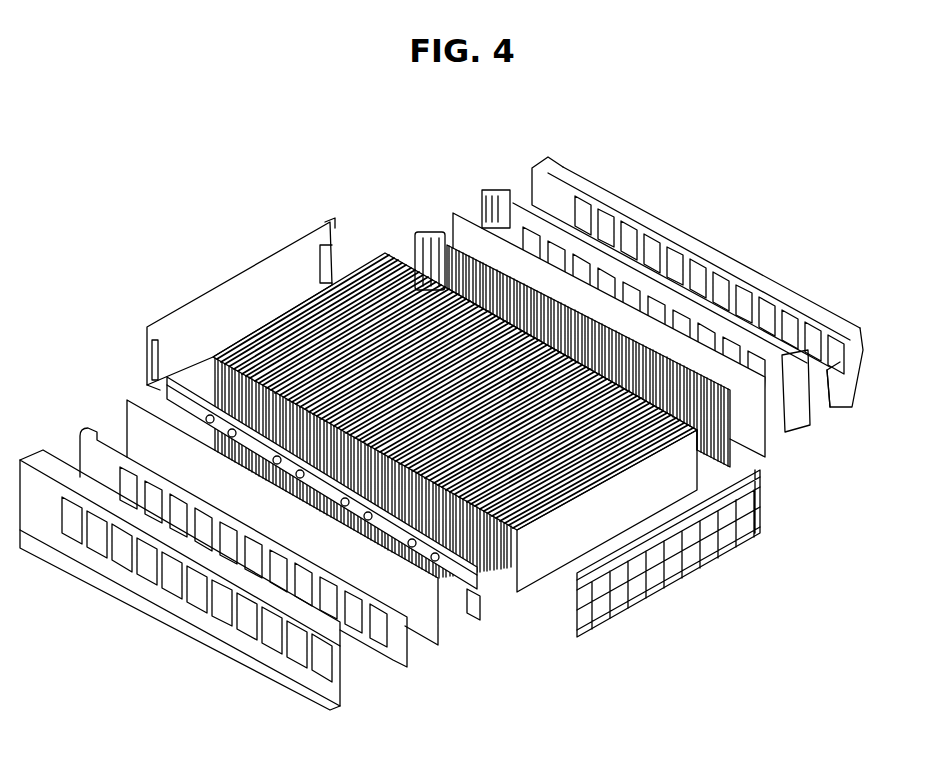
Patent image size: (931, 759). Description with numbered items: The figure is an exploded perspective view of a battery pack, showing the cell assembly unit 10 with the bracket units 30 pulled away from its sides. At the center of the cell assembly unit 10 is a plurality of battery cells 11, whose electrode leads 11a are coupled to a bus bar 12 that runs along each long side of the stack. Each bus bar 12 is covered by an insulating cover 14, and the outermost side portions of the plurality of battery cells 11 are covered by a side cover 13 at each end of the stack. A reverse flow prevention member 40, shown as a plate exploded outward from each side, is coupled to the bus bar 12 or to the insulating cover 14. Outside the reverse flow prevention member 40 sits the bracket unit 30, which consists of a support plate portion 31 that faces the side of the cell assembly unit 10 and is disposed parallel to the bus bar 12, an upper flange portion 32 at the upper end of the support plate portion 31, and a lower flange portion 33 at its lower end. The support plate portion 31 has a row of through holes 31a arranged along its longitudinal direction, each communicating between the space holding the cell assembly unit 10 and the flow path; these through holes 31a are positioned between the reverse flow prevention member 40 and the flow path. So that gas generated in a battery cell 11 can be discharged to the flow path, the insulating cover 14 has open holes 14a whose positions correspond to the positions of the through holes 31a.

The cell assembly unit 10 is at (62, 236).
The battery cell 11 is at (292, 306).
The electrode lead 11a is at (192, 390).
The bus bar 12 is at (174, 378).
The side cover 13 is at (197, 297).
The insulating cover 14 is at (100, 438).
The open hole 14a is at (128, 483).
The bracket unit 30 is at (465, 448).
The support plate portion 31 is at (465, 431).
The through hole 31a is at (190, 593).
The upper flange portion 32 is at (110, 535).
The lower flange portion 33 is at (267, 668).
The reverse flow prevention member 40 is at (778, 455).